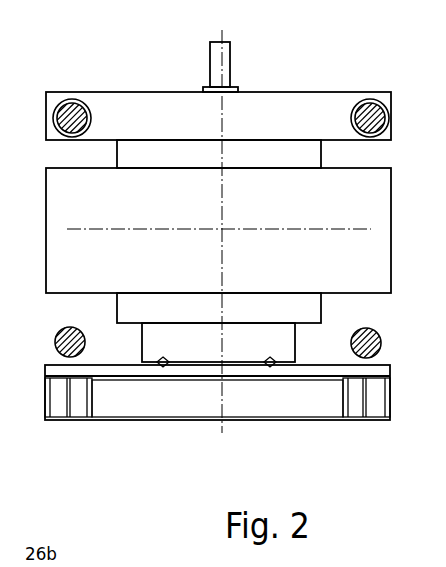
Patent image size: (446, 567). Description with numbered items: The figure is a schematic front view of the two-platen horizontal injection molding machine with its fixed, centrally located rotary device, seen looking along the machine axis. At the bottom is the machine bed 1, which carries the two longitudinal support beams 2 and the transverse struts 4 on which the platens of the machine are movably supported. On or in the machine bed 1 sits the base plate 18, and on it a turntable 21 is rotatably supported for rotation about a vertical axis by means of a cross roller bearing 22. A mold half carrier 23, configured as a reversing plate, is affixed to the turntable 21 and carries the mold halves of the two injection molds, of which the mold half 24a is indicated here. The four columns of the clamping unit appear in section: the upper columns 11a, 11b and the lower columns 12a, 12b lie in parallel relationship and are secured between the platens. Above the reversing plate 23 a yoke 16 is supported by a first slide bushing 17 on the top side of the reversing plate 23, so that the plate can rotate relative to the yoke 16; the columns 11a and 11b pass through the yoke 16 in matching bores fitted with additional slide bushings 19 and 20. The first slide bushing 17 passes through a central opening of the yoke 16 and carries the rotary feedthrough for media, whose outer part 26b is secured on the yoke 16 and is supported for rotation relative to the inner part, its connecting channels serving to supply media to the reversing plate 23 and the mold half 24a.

The machine bed 1 is at (270, 422).
The longitudinal support beams 2 is at (63, 422).
The transverse struts 4 is at (199, 396).
The column 11a is at (68, 102).
The column 11b is at (375, 110).
The column 12a is at (58, 340).
The column 12b is at (376, 342).
The yoke 16 is at (298, 112).
The first slide bushing 17 is at (208, 145).
The base plate 18 is at (245, 370).
The slide bushing 19 is at (57, 132).
The slide bushing 20 is at (375, 137).
The turntable 21 is at (152, 307).
The cross roller bearing 22 is at (162, 368).
The mold half carrier 23 is at (283, 160).
The mold half 24a is at (307, 272).
The outer part 26b is at (230, 77).